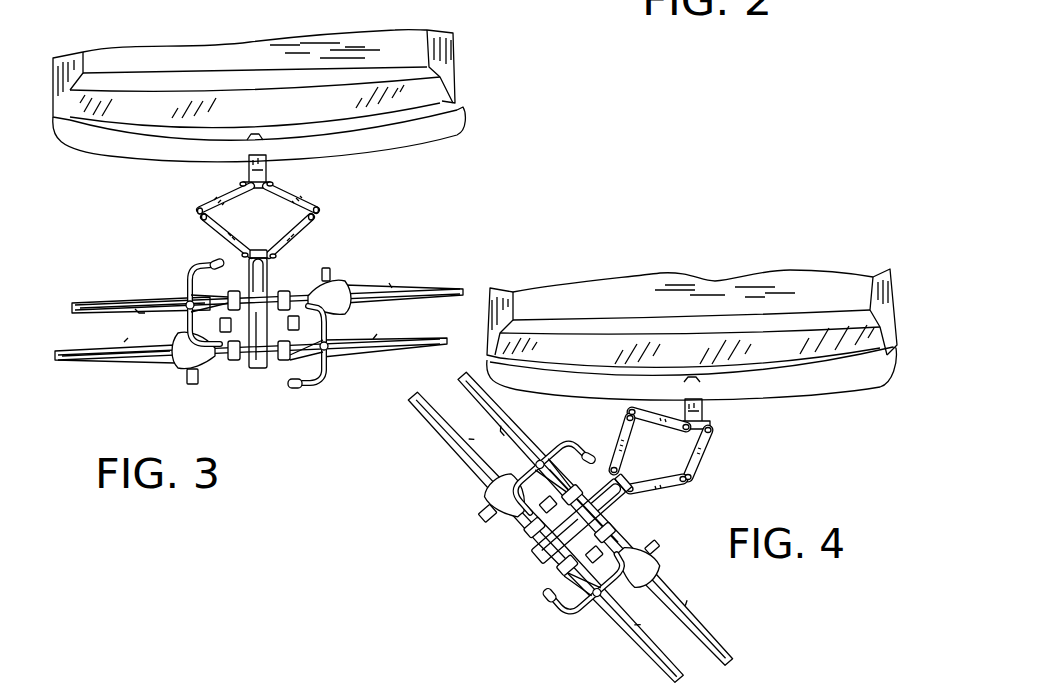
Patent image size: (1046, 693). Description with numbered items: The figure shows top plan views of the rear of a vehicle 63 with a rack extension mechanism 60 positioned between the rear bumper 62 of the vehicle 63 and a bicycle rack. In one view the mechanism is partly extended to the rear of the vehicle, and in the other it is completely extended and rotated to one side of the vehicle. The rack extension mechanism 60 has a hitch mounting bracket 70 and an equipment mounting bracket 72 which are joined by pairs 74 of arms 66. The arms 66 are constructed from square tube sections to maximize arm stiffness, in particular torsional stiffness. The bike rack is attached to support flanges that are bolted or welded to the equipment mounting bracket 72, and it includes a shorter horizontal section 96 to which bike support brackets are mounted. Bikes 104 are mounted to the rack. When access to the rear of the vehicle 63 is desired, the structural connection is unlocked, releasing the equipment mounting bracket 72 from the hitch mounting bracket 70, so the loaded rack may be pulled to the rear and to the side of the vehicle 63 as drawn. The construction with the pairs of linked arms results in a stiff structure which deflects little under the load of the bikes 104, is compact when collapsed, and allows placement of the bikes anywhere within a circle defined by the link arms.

In FIG. 3, the rack extension mechanism 60 is at (276, 212).
In FIG. 4, the rack extension mechanism 60 is at (691, 451).
In FIG. 4, the rear bumper 62 is at (847, 387).
In FIG. 3, the vehicle 63 is at (453, 65).
In FIG. 4, the vehicle 63 is at (892, 298).
In FIG. 3, the arms 66 is at (222, 192).
In FIG. 3, the hitch mounting bracket 70 is at (267, 167).
In FIG. 4, the hitch mounting bracket 70 is at (702, 413).
In FIG. 3, the equipment mounting bracket 72 is at (273, 263).
In FIG. 4, the equipment mounting bracket 72 is at (621, 493).
In FIG. 3, the pairs of arms 74 is at (307, 202).
In FIG. 4, the pairs of arms 74 is at (651, 480).
In FIG. 3, the horizontal section 96 is at (257, 368).
In FIG. 4, the horizontal section 96 is at (525, 558).
In FIG. 3, the bikes 104 is at (107, 300).
In FIG. 4, the bikes 104 is at (420, 408).